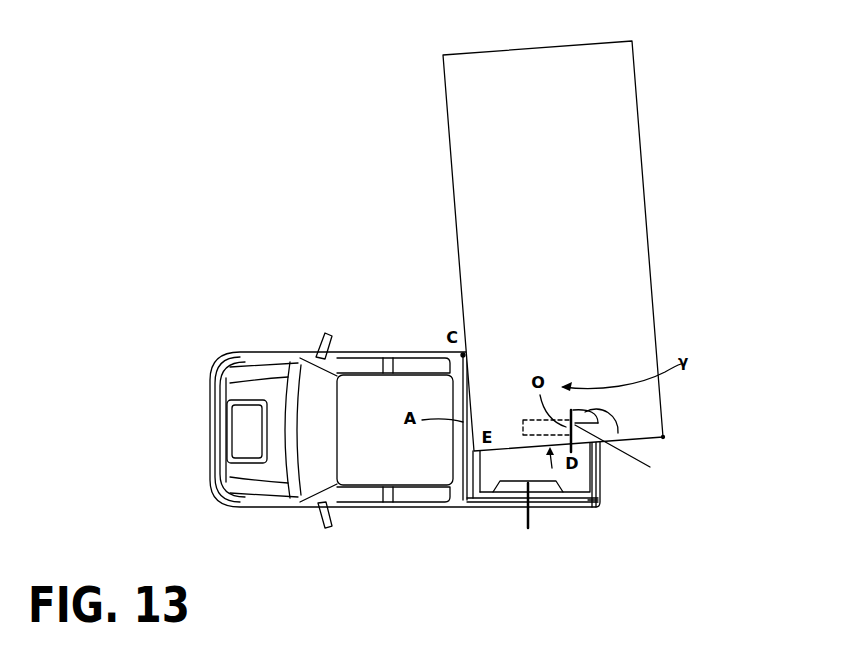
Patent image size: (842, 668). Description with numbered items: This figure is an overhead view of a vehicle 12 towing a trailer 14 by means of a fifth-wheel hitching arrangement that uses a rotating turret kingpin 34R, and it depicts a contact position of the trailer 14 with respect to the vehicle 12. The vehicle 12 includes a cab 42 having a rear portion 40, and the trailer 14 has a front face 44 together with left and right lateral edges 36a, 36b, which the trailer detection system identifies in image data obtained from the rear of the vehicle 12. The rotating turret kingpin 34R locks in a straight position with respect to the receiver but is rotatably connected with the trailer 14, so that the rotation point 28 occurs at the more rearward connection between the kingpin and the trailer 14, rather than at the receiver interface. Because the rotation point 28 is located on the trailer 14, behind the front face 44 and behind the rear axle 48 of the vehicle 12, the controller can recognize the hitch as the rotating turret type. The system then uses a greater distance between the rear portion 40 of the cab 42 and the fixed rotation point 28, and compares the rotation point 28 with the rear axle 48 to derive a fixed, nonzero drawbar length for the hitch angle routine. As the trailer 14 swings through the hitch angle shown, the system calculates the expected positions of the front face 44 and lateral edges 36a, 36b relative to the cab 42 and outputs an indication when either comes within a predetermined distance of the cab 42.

The vehicle 12 is at (438, 434).
The trailer 14 is at (615, 275).
The rotation point 28 is at (603, 450).
The rotating turret kingpin 34R is at (578, 505).
The left lateral edge of the trailer 36a is at (470, 457).
The right lateral edge of the trailer 36b is at (665, 438).
The rear portion of the cab 40 is at (477, 500).
The cab 42 is at (398, 458).
The front face of the trailer 44 is at (510, 448).
The rear axle 48 is at (529, 525).